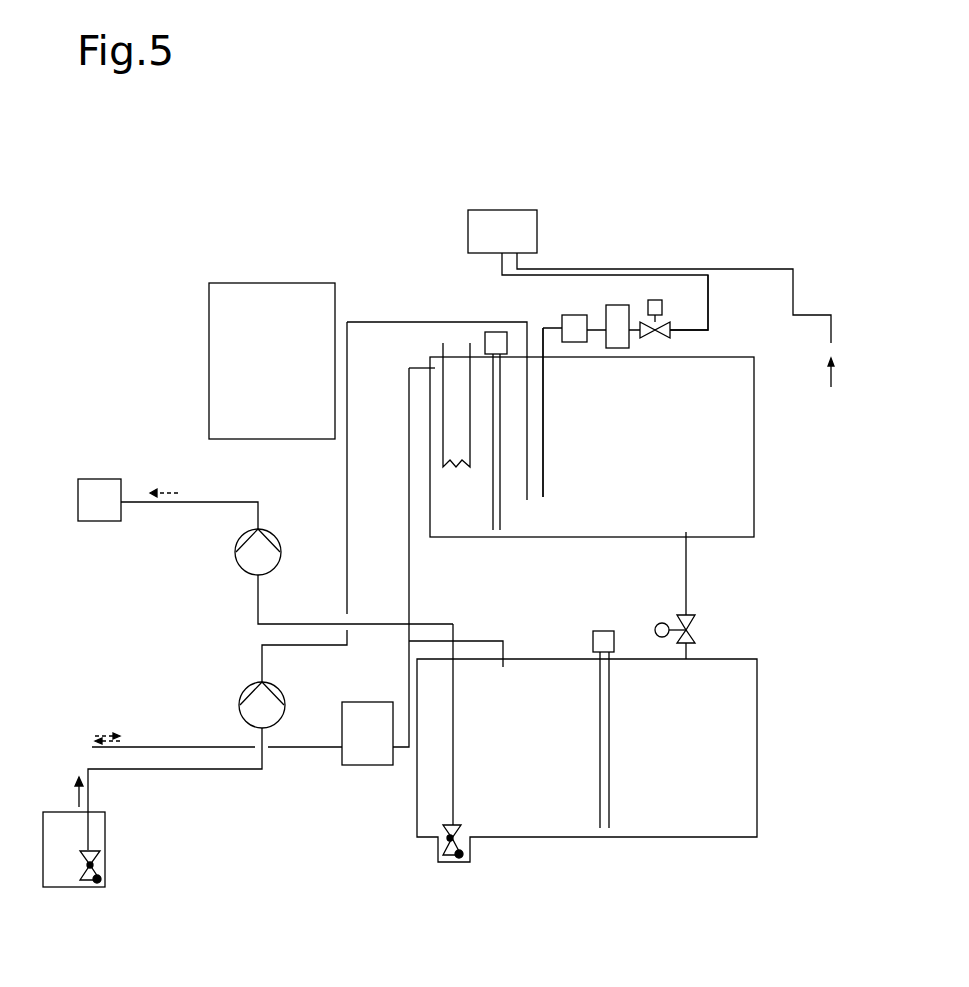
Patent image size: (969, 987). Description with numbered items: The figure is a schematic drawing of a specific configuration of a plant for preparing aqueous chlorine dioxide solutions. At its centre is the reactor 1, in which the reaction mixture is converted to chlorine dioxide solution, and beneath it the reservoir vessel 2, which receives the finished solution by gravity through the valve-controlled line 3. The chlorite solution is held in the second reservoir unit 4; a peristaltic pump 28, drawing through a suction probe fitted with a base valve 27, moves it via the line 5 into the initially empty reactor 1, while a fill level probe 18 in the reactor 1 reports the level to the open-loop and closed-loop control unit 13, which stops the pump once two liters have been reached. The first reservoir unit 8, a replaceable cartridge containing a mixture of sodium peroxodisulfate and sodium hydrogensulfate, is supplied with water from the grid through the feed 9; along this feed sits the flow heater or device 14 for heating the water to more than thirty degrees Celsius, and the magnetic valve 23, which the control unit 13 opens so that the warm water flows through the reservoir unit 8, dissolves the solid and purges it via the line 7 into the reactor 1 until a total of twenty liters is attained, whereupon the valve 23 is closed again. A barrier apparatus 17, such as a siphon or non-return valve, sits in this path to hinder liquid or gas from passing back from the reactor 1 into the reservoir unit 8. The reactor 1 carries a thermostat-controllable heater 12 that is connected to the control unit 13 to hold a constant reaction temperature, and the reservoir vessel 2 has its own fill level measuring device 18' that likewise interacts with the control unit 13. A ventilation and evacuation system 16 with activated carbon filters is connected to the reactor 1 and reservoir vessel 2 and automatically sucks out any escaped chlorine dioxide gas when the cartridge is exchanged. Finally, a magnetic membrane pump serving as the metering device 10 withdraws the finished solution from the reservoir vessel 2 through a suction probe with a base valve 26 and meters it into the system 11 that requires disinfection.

The reactor 1 is at (673, 395).
The reservoir vessel 2 is at (720, 818).
The line 3 is at (693, 597).
The second reservoir unit 4 is at (62, 872).
The line 5 is at (363, 319).
The line 7 is at (548, 327).
The first reservoir unit 8 is at (617, 312).
The feed 9 is at (693, 270).
The metering device 10 is at (252, 560).
The system 11 is at (107, 500).
The thermostat-controllable heater 12 is at (460, 452).
The open-loop and closed-loop control unit 13 is at (263, 408).
The device for heating and/or cooling water 14 is at (510, 227).
The ventilation and evacuation system 16 is at (372, 740).
The barrier apparatus 17 is at (573, 342).
The fill level measuring device 18 is at (542, 459).
The fill level measuring device 18' is at (707, 729).
The magnetic valve 23 is at (655, 334).
The base valve 26 is at (460, 747).
The base valve 27 is at (98, 860).
The peristaltic pump 28 is at (253, 708).